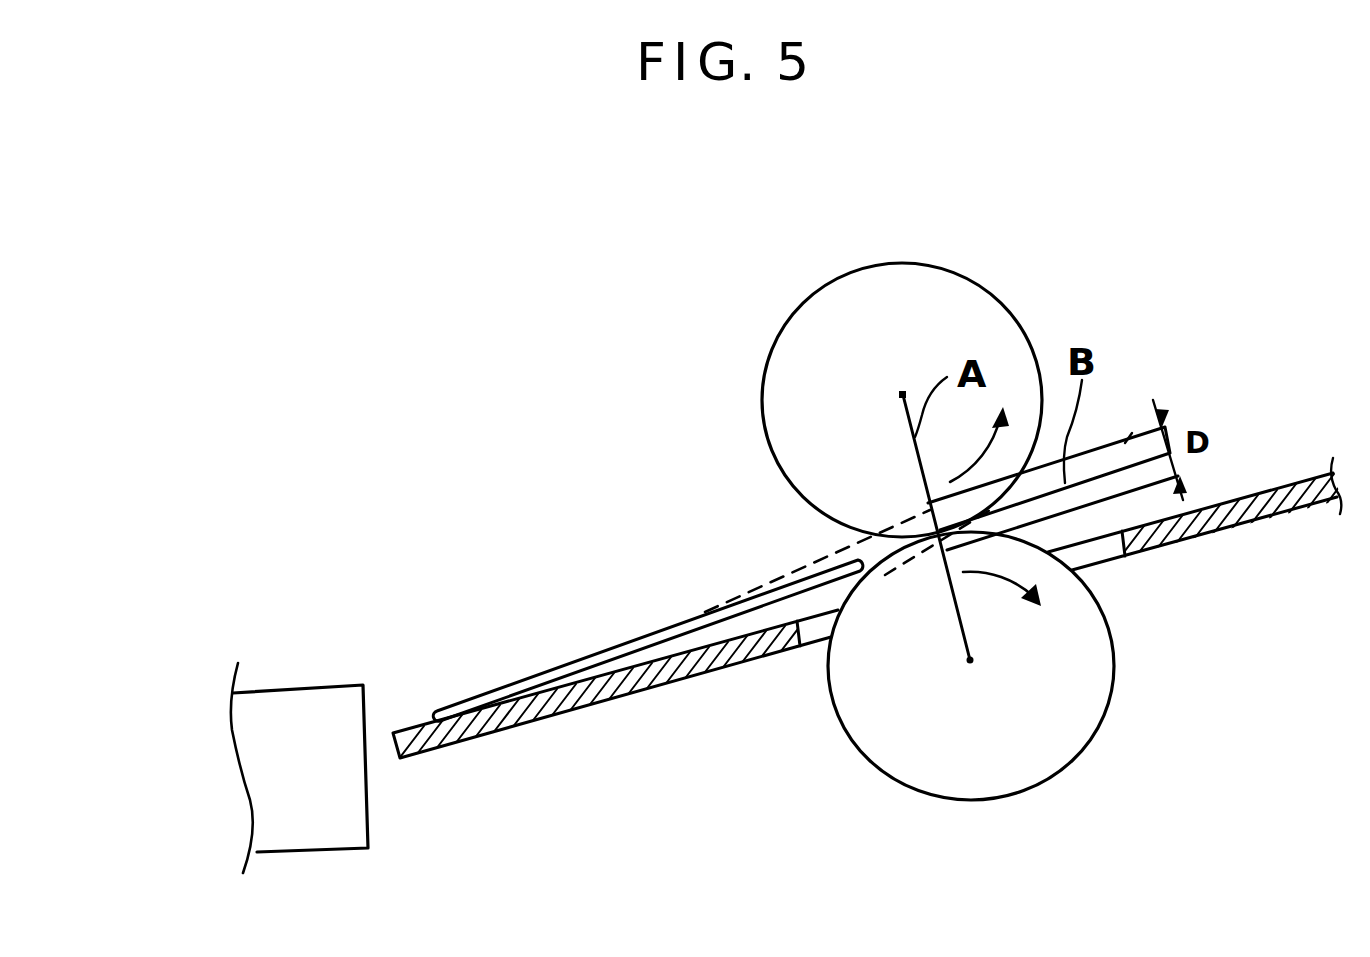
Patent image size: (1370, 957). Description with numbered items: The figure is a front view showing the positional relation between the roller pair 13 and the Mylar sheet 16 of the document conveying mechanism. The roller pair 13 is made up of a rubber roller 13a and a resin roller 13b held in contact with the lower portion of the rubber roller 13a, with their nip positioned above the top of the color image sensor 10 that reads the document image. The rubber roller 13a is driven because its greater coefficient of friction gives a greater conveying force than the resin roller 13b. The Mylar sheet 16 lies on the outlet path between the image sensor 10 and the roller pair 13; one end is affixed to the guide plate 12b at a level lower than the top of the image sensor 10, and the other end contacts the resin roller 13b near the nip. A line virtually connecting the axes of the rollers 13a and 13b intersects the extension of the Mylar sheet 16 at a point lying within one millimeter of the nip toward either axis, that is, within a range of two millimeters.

The color image sensor 10 is at (368, 820).
The guide plate 12b is at (713, 673).
The roller pair 13 is at (977, 473).
The rubber roller 13a is at (987, 290).
The resin roller 13b is at (1103, 718).
The Mylar sheet 16 is at (550, 663).